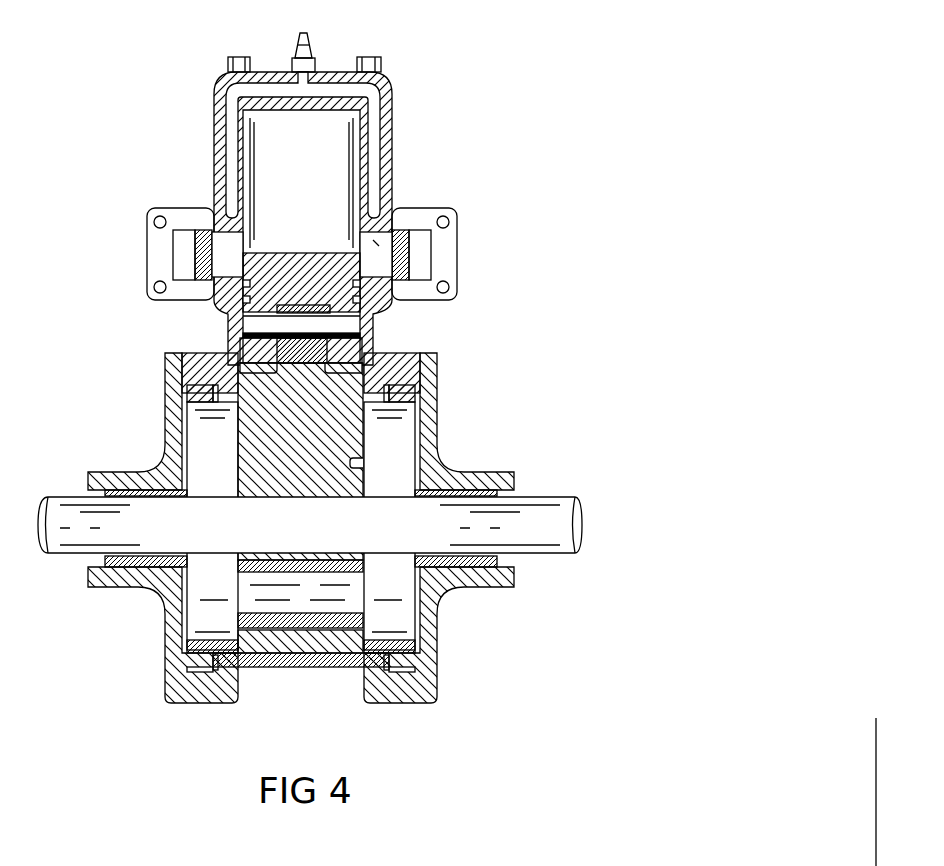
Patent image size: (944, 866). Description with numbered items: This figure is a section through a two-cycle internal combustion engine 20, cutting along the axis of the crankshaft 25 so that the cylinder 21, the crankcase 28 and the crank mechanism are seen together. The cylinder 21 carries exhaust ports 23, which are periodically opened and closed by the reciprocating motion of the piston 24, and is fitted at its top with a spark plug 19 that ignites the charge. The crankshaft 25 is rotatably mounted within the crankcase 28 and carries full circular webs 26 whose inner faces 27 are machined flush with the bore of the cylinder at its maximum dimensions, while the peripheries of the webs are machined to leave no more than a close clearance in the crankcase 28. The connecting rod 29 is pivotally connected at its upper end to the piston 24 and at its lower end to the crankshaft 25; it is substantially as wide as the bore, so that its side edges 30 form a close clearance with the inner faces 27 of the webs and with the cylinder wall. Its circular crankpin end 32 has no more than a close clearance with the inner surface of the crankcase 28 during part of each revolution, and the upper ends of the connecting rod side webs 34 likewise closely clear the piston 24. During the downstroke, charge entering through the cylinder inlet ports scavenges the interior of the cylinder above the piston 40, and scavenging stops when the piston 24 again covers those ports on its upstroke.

The spark plug 19 is at (313, 46).
The two-cycle internal combustion engine 20 is at (440, 87).
The cylinder 21 is at (393, 168).
The exhaust ports 23 is at (377, 243).
The piston 24 is at (347, 267).
The crankshaft 25 is at (540, 545).
The crankshaft webs 26 is at (203, 422).
The inner faces of the crankshaft webs 27 is at (240, 477).
The crankcase 28 is at (388, 703).
The connecting rod 29 is at (325, 402).
The side edges of the connecting rod 30 is at (237, 448).
The crankpin end 32 is at (313, 645).
The connecting rod side webs 34 is at (378, 352).
The interior of the cylinder above the piston 40 is at (340, 153).